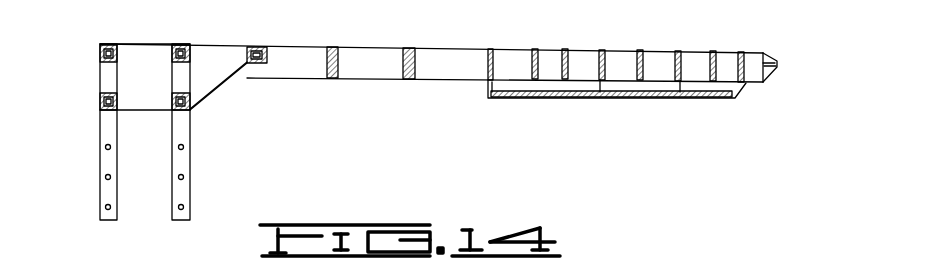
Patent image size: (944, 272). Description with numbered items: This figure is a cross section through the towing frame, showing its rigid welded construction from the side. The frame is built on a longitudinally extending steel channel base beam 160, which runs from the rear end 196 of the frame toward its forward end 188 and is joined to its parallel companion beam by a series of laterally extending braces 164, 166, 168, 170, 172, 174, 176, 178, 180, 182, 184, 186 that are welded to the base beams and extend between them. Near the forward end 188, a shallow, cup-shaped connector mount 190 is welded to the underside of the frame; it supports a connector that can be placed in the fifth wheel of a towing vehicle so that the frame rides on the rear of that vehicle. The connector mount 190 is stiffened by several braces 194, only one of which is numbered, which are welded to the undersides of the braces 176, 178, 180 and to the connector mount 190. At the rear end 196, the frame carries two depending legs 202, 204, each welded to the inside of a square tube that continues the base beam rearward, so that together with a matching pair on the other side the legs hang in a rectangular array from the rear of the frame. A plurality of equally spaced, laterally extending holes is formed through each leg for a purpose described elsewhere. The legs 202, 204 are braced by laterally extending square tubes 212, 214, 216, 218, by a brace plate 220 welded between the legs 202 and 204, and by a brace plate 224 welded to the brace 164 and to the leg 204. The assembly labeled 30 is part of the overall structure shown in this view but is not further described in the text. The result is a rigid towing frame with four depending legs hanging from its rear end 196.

The nozzle assembly 30 is at (706, 16).
The base beam 160 is at (455, 56).
The brace 164 is at (268, 55).
The brace 166 is at (338, 70).
The brace 168 is at (405, 62).
The brace 170 is at (486, 62).
The brace 172 is at (530, 60).
The brace 174 is at (560, 60).
The brace 176 is at (596, 60).
The brace 178 is at (636, 60).
The brace 180 is at (672, 62).
The brace 182 is at (708, 62).
The brace 184 is at (742, 60).
The brace 186 is at (770, 70).
The forward end 188 is at (785, 62).
The connector mount 190 is at (680, 98).
The brace 194 is at (650, 92).
The rear end 196 is at (92, 51).
The depending leg 202 is at (106, 162).
The depending leg 204 is at (186, 170).
The square tube 212 is at (115, 44).
The square tube 214 is at (185, 44).
The square tube 216 is at (100, 103).
The square tube 218 is at (198, 113).
The brace plate 220 is at (138, 55).
The brace plate 224 is at (220, 60).